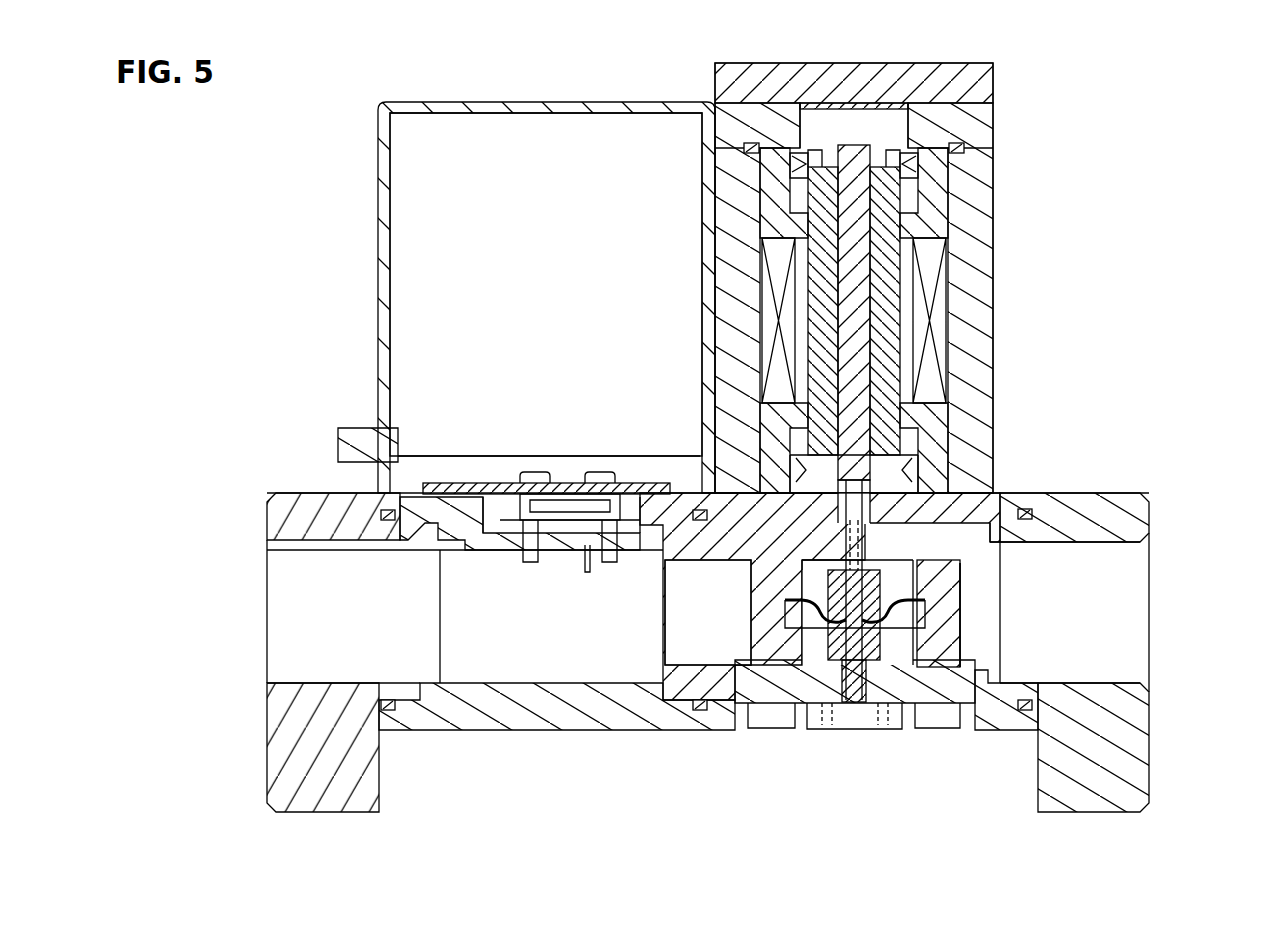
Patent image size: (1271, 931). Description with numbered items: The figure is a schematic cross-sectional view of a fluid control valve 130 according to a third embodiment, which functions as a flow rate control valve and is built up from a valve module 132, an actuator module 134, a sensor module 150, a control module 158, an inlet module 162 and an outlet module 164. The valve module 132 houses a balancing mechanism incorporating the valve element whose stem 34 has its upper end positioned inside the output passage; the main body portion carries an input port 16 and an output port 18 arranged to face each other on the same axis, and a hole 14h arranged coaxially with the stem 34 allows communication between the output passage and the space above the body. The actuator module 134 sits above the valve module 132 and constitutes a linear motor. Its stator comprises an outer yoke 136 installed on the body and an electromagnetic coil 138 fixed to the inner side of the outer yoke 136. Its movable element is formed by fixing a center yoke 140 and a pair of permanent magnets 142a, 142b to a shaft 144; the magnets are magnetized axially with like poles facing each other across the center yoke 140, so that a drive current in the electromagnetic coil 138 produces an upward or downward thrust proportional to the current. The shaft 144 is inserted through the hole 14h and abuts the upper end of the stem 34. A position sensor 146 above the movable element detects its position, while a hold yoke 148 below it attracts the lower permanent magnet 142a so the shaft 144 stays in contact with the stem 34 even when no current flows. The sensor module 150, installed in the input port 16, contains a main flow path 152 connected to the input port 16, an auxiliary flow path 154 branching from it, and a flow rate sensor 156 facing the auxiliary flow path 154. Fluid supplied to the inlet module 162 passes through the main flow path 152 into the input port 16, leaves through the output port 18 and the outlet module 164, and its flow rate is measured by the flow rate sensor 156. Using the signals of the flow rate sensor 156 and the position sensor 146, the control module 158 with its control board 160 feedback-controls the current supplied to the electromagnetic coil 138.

The fluid control valve 130 is at (243, 156).
The valve module 132 is at (837, 735).
The actuator module 134 is at (921, 62).
The outer yoke 136 is at (972, 245).
The electromagnetic coil 138 is at (950, 300).
The center yoke 140 is at (820, 298).
The lower permanent magnet 142a is at (822, 355).
The upper permanent magnet 142b is at (820, 255).
The shaft 144 is at (851, 207).
The position sensor 146 is at (858, 102).
The hold yoke 148 is at (955, 440).
The hole 14h is at (850, 512).
The stem 34 is at (872, 562).
The input port 16 is at (690, 610).
The output port 18 is at (972, 604).
The sensor module 150 is at (573, 737).
The main flow path 152 is at (498, 645).
The auxiliary flow path 154 is at (522, 562).
The flow rate sensor 156 is at (555, 510).
The control module 158 is at (369, 253).
The control board 160 is at (432, 207).
The inlet module 162 is at (243, 742).
The outlet module 164 is at (1159, 742).